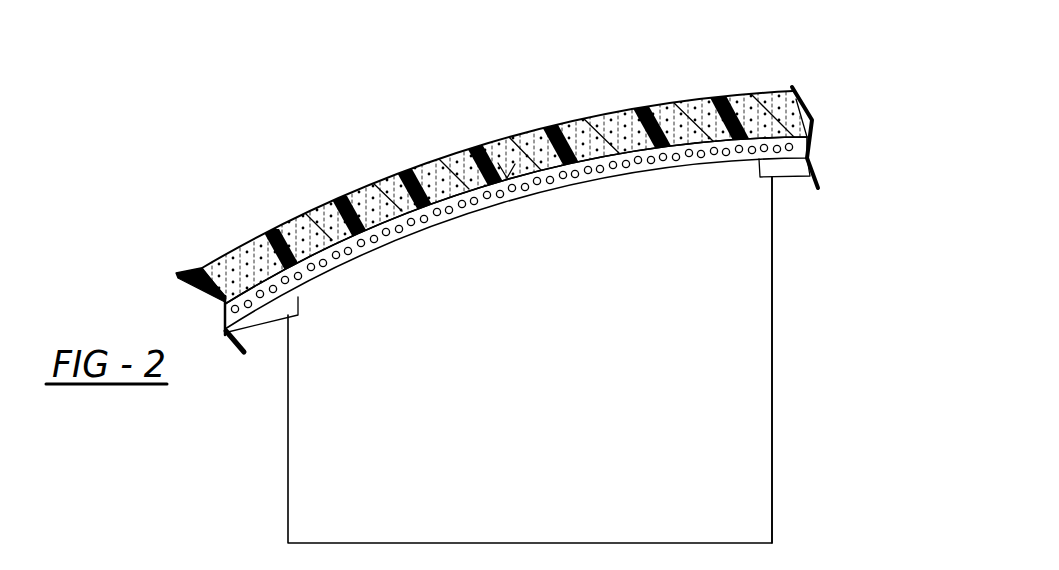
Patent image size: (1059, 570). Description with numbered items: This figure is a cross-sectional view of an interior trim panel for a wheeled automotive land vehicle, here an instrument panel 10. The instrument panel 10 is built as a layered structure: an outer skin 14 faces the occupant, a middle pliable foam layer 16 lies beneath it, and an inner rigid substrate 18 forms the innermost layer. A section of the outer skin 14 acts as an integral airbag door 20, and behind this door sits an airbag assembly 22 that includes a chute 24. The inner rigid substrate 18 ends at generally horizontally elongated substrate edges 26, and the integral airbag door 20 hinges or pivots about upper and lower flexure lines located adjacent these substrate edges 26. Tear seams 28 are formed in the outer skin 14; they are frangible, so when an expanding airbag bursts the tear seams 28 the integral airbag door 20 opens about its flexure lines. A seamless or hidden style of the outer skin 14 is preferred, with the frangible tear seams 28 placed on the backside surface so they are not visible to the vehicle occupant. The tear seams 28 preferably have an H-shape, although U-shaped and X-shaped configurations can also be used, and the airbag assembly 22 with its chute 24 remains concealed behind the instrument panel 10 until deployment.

The instrument panel 10 is at (473, 236).
The outer skin 14 is at (272, 242).
The middle pliable foam layer 16 is at (422, 227).
The inner rigid substrate 18 is at (252, 322).
The integral airbag door 20 is at (491, 197).
The airbag assembly 22 is at (596, 360).
The chute 24 is at (772, 258).
The substrate edges 26 is at (301, 294).
The tear seams 28 is at (502, 167).